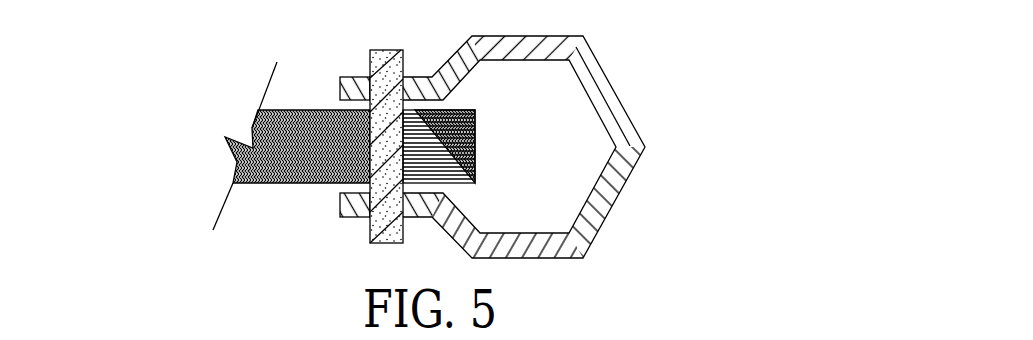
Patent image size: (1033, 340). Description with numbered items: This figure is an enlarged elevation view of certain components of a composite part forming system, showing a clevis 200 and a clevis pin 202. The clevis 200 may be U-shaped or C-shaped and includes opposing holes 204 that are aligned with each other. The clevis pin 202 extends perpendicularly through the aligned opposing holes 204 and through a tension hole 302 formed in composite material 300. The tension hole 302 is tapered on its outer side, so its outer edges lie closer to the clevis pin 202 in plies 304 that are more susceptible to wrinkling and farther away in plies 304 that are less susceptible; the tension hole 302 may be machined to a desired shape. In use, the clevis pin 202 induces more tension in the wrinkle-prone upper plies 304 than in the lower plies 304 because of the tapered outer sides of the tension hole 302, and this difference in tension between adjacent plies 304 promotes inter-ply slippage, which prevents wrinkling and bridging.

The clevis 200 is at (598, 76).
The clevis pin 202 is at (367, 48).
The opposing holes 204 is at (365, 72).
The composite material 300 is at (455, 110).
The tension hole 302 is at (433, 162).
The plies 304 is at (475, 168).